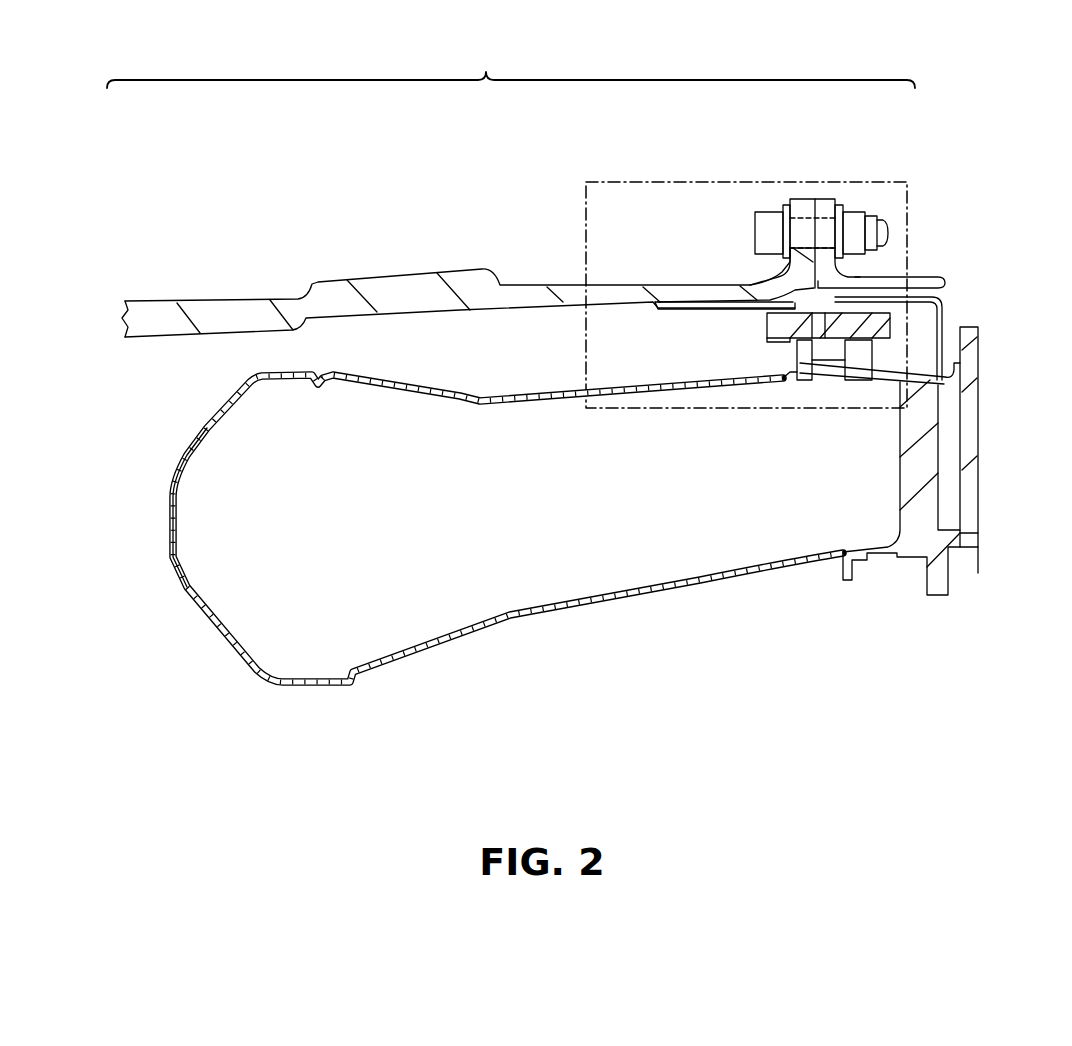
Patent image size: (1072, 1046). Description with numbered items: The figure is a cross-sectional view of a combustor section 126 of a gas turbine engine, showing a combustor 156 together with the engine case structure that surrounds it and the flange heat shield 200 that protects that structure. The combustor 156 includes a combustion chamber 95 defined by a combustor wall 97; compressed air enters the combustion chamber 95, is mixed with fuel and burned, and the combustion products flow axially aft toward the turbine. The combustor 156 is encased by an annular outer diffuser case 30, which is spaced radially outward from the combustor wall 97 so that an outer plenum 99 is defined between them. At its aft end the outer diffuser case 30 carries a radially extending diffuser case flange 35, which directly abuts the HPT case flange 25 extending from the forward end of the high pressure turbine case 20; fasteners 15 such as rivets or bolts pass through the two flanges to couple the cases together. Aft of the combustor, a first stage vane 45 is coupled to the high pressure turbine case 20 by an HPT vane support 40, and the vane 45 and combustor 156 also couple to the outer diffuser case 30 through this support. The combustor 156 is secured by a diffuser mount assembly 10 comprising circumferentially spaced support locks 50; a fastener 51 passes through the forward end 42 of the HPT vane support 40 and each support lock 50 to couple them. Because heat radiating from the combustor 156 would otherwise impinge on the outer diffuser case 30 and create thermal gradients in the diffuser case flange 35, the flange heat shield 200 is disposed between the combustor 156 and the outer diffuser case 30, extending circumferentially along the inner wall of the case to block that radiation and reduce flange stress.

The diffuser mount assembly 10 is at (630, 181).
The fasteners 15 is at (766, 226).
The high pressure turbine case 20 is at (932, 275).
The HPT case flange 25 is at (829, 205).
The outer diffuser case 30 is at (240, 310).
The diffuser case flange 35 is at (803, 205).
The HPT vane support 40 is at (945, 302).
The forward end 42 is at (848, 314).
The vane 45 is at (922, 463).
The support lock 50 is at (800, 363).
The fastener 51 is at (815, 345).
The combustion chamber 95 is at (376, 526).
The combustor wall 97 is at (203, 440).
The outer plenum 99 is at (483, 350).
The combustor section 126 is at (511, 65).
The combustor 156 is at (445, 418).
The flange heat shield 200 is at (675, 304).